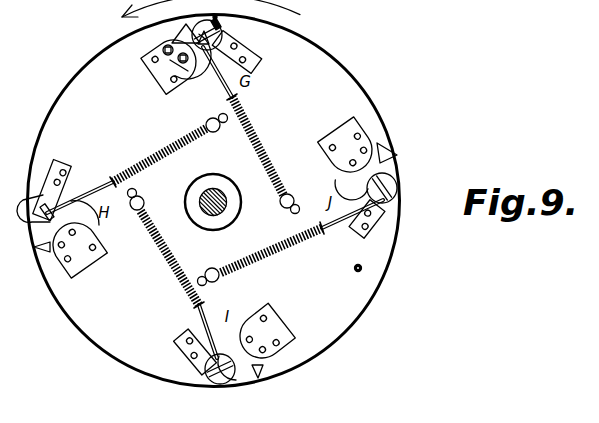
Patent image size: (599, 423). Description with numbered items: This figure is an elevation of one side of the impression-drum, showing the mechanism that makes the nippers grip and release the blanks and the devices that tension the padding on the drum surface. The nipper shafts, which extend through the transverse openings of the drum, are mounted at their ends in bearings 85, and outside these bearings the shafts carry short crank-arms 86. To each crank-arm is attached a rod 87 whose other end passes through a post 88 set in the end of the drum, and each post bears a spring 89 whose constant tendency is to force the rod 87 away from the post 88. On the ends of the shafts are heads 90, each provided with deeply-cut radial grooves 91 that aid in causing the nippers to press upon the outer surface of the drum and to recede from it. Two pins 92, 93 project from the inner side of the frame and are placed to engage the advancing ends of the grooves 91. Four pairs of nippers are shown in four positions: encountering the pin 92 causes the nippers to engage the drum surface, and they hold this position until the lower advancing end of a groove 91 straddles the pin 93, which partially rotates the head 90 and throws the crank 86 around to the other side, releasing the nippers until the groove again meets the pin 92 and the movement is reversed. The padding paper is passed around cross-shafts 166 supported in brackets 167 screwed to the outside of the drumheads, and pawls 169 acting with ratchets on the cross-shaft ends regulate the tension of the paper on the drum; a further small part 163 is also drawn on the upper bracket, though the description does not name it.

The bearings 85 is at (248, 60).
The crank-arms 86 is at (44, 222).
The rods 87 is at (108, 181).
The posts 88 is at (210, 119).
The springs 89 is at (165, 151).
The heads 90 is at (397, 188).
The radial grooves 91 is at (393, 180).
The pin 92 is at (222, 28).
The pin 93 is at (357, 273).
The ratchet gear 163 is at (164, 58).
The cross-shafts 166 is at (194, 33).
The brackets 167 is at (88, 258).
The pawls 169 is at (178, 78).